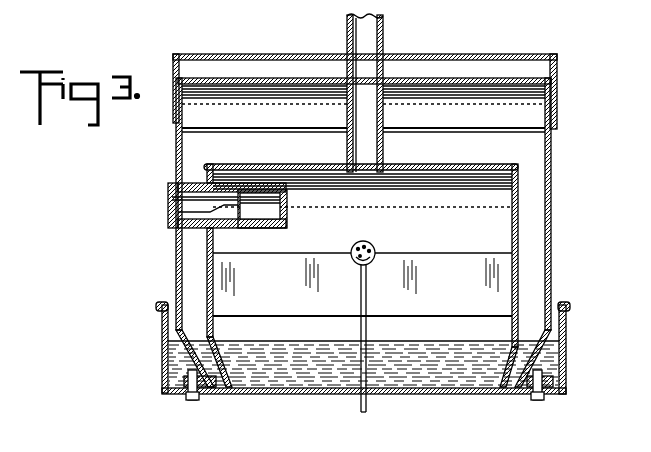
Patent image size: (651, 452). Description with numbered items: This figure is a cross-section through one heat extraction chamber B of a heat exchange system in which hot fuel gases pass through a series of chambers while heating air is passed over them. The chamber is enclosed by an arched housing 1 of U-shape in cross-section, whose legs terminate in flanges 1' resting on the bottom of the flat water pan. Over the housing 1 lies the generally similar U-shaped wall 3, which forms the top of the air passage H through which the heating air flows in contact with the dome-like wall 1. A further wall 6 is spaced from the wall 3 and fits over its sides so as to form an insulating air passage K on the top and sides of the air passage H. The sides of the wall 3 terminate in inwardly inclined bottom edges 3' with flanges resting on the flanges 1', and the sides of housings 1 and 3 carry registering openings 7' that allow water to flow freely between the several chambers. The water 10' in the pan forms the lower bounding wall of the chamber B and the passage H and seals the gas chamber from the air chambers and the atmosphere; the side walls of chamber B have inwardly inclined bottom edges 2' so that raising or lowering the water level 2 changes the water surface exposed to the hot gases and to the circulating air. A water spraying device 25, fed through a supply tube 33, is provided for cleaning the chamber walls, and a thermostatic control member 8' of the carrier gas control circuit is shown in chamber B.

The inlet tube 33 is at (347, 22).
The wall 3 is at (363, 178).
The wall 6 is at (449, 57).
The air passage K is at (510, 73).
The passage H is at (509, 155).
The upper wall 1 is at (361, 244).
The thermostatic control member 8' is at (201, 205).
The water spraying device 25 is at (355, 244).
The heat extraction chamber B is at (415, 226).
The inwardly inclined bottom edges 2' is at (363, 335).
The liquid level 2 is at (362, 321).
The inwardly inclined bottom edges 3' is at (342, 348).
The registering openings 7' is at (390, 394).
The flanges 1' is at (353, 404).
The water 10' is at (363, 386).